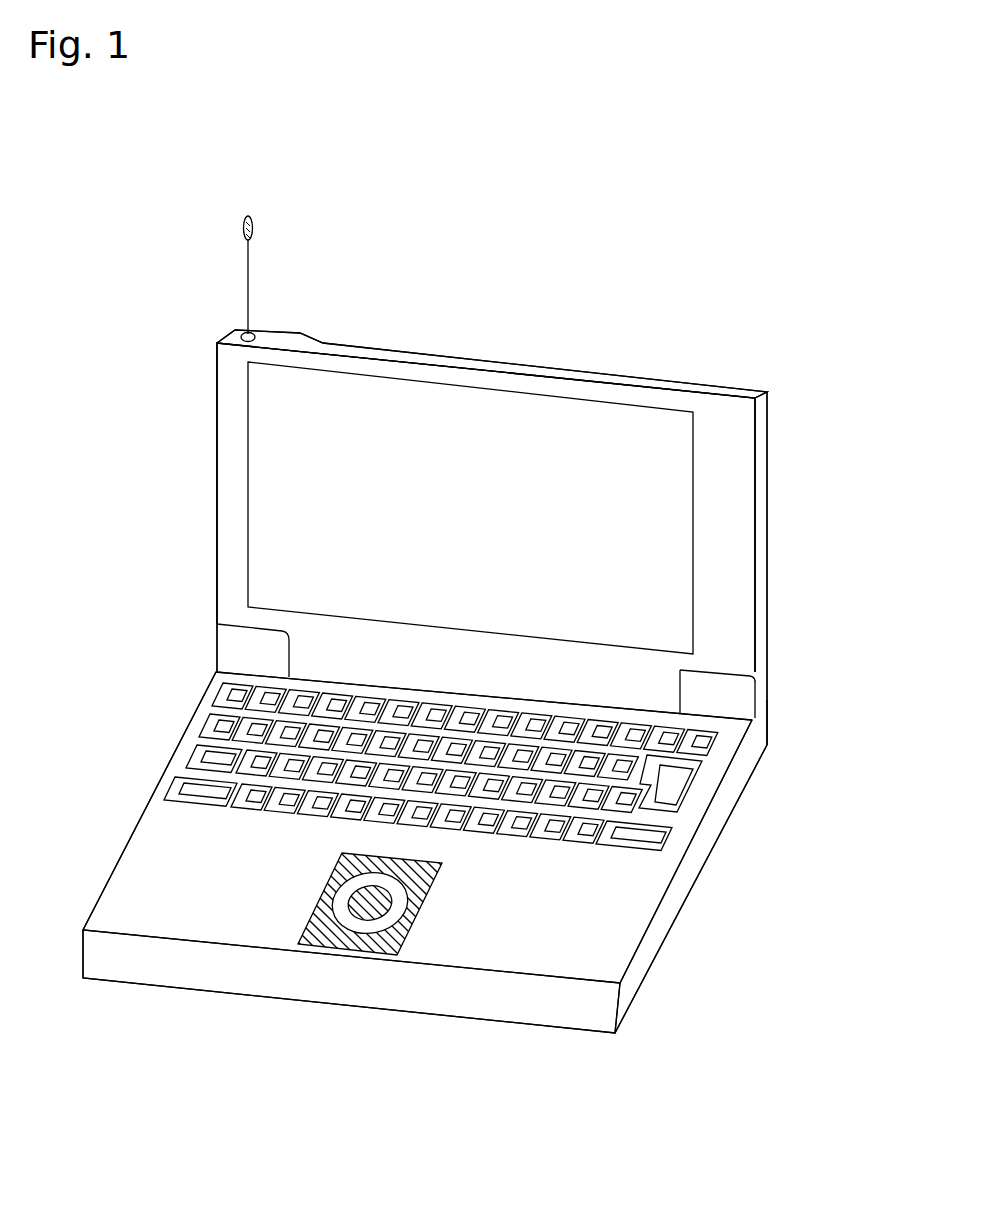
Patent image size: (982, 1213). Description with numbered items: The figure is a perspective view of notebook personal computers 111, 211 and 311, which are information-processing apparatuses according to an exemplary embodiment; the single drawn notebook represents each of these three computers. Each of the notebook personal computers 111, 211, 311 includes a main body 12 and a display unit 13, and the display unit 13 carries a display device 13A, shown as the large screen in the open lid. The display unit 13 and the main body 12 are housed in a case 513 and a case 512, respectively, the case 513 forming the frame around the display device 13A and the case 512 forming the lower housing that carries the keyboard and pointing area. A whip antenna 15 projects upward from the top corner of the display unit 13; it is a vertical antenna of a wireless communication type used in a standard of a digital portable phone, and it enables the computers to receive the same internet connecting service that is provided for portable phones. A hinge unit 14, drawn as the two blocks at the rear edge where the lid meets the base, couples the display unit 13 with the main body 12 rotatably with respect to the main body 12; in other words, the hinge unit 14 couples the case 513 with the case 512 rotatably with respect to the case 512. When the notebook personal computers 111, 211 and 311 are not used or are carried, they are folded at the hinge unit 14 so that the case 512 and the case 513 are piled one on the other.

The notebook personal computer 111 is at (724, 366).
The notebook personal computer 211 is at (425, 681).
The notebook personal computer 311 is at (425, 681).
The main body 12 is at (715, 818).
The display unit 13 is at (735, 466).
The display device 13A is at (660, 503).
The hinge unit 14 is at (232, 650).
The whip antenna 15 is at (246, 265).
The case 512 is at (628, 900).
The case 513 is at (727, 577).